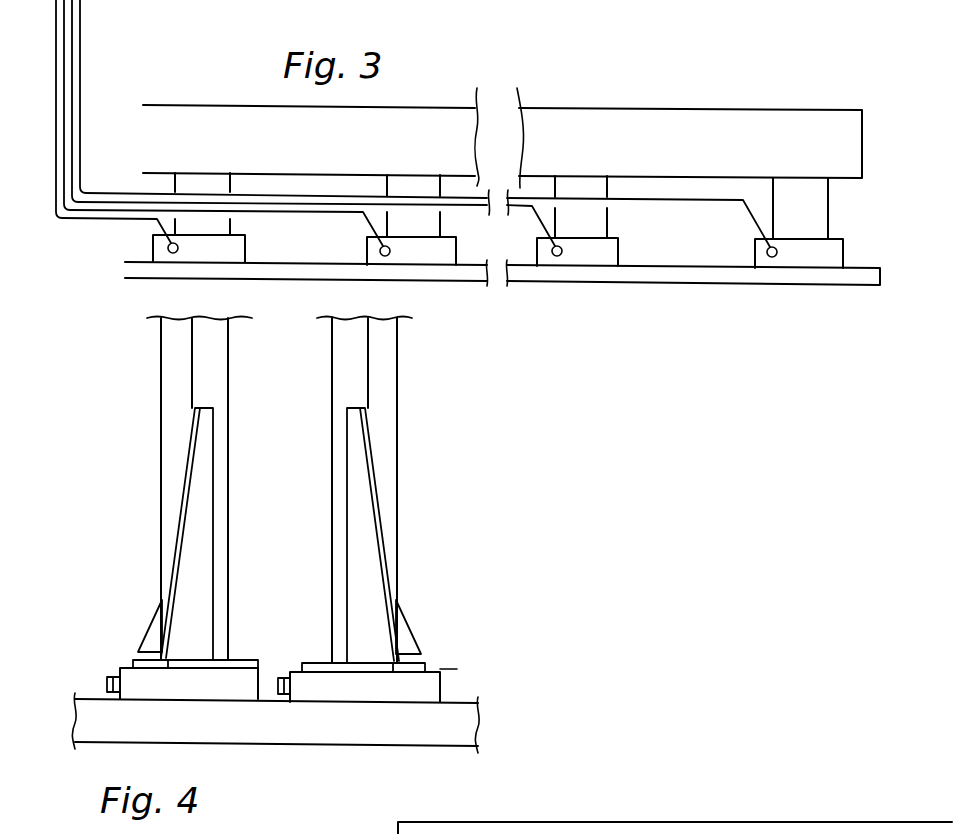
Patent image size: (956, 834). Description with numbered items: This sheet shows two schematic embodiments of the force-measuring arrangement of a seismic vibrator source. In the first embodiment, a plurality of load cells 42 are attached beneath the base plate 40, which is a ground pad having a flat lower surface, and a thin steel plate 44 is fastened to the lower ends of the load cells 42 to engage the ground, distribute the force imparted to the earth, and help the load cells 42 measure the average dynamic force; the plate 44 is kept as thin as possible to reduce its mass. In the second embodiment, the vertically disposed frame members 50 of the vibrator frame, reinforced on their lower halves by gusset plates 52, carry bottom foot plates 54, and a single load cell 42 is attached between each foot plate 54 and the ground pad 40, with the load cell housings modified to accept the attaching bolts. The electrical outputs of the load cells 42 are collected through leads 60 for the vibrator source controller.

In FIG. 3, the base plate 40 is at (655, 114).
In FIG. 4, the base plate 40 is at (302, 733).
In FIG. 3, the load cells 42 is at (367, 249).
In FIG. 4, the load cells 42 is at (432, 685).
In FIG. 3, the plate 44 is at (578, 274).
In FIG. 4, the frame members 50 is at (338, 373).
In FIG. 4, the gusset plates 52 is at (188, 547).
In FIG. 4, the bottom foot plates 54 is at (133, 660).
In FIG. 4, the leads 60 is at (105, 677).